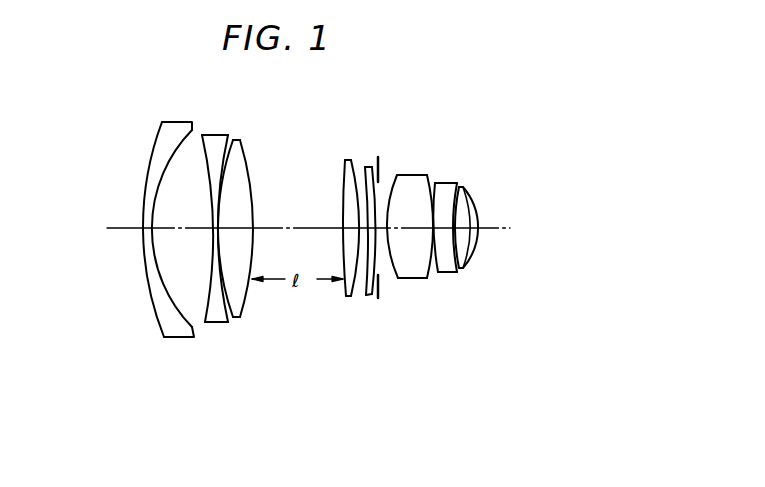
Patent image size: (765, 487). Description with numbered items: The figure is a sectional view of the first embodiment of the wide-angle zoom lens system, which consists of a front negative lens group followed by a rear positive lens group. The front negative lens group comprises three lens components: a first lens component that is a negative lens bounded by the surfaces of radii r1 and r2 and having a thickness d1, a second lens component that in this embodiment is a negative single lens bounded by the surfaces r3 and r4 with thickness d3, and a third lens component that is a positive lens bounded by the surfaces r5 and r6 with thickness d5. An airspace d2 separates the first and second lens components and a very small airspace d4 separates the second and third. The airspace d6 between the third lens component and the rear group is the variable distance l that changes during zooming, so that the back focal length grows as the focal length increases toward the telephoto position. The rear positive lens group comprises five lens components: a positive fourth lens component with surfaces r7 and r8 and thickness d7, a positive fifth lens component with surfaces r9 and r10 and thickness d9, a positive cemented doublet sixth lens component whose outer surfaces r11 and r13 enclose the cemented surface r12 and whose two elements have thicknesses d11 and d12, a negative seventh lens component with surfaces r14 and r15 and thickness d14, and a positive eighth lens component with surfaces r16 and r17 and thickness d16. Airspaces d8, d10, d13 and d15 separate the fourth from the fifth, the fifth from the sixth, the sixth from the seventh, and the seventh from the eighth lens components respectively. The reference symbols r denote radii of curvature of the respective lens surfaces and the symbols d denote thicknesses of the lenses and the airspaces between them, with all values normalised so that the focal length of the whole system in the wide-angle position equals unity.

The radius of curvature of first lens surface r1 is at (155, 328).
The radius of curvature of second lens surface r2 is at (183, 308).
The radius of curvature of third lens surface r3 is at (206, 312).
The radius of curvature of fourth lens surface r4 is at (226, 318).
The radius of curvature of fifth lens surface r5 is at (235, 316).
The radius of curvature of sixth lens surface r6 is at (245, 310).
The radius of curvature of seventh lens surface r7 is at (345, 298).
The radius of curvature of eighth lens surface r8 is at (349, 300).
The radius of curvature of ninth lens surface r9 is at (366, 298).
The radius of curvature of tenth lens surface r10 is at (376, 296).
The radius of curvature of eleventh lens surface r11 is at (397, 280).
The radius of curvature of twelfth lens surface r12 is at (426, 280).
The radius of curvature of thirteenth lens surface r13 is at (438, 275).
The radius of curvature of fourteenth lens surface r14 is at (456, 280).
The radius of curvature of fifteenth lens surface r15 is at (462, 275).
The radius of curvature of sixteenth lens surface r16 is at (472, 262).
The radius of curvature of seventeenth lens surface r17 is at (478, 248).
The thickness of first lens component d1 is at (147, 226).
The airspace between first and second lens components d2 is at (172, 228).
The thickness of second lens component d3 is at (214, 228).
The airspace between second and third lens components d4 is at (215, 228).
The thickness of third lens component d5 is at (243, 228).
The variable airspace between front and rear lens groups d6 is at (262, 228).
The thickness of fourth lens component d7 is at (352, 224).
The airspace between fourth and fifth lens components d8 is at (348, 220).
The thickness of fifth lens component d9 is at (358, 215).
The airspace between fifth and sixth lens components d10 is at (367, 180).
The thickness of first element of sixth lens component d11 is at (402, 178).
The thickness of second element of sixth lens component d12 is at (422, 178).
The airspace between sixth and seventh lens components d13 is at (438, 183).
The thickness of seventh lens component d14 is at (455, 183).
The airspace between seventh and eighth lens components d15 is at (480, 185).
The thickness of eighth lens component d16 is at (476, 218).